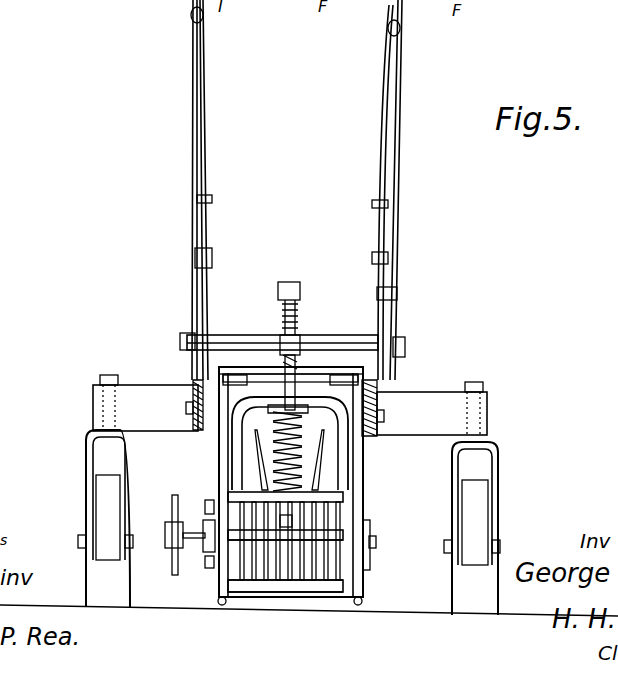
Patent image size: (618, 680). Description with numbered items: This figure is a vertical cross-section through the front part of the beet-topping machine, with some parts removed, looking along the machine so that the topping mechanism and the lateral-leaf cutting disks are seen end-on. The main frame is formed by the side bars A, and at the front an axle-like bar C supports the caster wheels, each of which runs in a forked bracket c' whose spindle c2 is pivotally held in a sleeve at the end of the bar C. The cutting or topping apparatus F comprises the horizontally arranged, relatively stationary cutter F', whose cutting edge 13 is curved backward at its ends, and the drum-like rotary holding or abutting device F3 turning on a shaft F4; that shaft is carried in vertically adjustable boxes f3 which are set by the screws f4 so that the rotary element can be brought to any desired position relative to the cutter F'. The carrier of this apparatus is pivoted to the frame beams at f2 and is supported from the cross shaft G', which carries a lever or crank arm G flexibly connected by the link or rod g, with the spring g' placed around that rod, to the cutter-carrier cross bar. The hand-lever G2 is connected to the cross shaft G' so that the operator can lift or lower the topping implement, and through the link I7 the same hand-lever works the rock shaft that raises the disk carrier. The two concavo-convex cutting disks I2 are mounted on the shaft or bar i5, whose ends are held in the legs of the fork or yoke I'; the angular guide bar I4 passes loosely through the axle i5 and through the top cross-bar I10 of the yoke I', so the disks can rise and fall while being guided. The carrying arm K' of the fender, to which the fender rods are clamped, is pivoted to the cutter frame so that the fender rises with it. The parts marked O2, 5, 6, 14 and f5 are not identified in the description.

The lifting rod O2 is at (197, 110).
The hand-lever G2 is at (400, 102).
The rod clip 5 is at (200, 280).
The rod clip 6 is at (378, 292).
The cutting edge 13 is at (354, 28).
The link I7 is at (400, 295).
The top cross-bar I10 is at (357, 385).
The lever or crank arm G is at (284, 281).
The link or rod g is at (305, 329).
The spring g' is at (302, 300).
The cross shaft G' is at (282, 321).
The guide bar I4 is at (277, 392).
The fork or yoke I' is at (286, 443).
The cutting disks I2 is at (257, 463).
The carrying arm K' is at (341, 450).
The grate bars 14 is at (247, 493).
The cutter F' is at (285, 595).
The rotary holding or abutting device F3 is at (303, 577).
The shaft or bar i5 is at (282, 523).
The shaft F4 is at (180, 545).
The cutting or topping apparatus F is at (172, 588).
The screws f4 is at (200, 518).
The shaft end f5 is at (172, 522).
The vertically adjustable boxes f3 is at (373, 542).
The side bars A is at (185, 395).
The spindle c2 is at (108, 375).
The pivot f2 is at (193, 407).
The axle-like bar C is at (170, 418).
The forked bracket c' is at (295, 522).